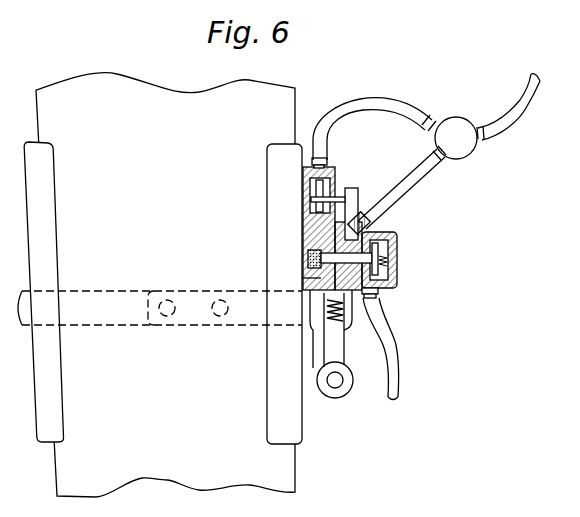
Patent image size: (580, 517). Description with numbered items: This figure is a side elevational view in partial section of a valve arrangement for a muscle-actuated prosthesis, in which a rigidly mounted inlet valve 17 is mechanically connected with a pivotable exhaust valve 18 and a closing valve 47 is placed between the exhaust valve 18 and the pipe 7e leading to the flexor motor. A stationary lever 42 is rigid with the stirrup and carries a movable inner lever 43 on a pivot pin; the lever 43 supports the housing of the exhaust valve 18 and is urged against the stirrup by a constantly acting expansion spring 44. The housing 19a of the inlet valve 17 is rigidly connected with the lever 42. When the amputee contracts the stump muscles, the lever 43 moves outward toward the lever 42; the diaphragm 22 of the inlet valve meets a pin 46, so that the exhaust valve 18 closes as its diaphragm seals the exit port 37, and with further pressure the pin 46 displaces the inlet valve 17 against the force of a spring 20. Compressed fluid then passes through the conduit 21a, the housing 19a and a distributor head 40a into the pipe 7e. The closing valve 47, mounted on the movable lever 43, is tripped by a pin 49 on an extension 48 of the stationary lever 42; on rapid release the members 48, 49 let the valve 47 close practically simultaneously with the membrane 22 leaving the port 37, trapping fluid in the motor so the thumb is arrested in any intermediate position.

The pipe 7e is at (515, 110).
The inlet valve 17 is at (396, 245).
The exhaust valve 18 is at (309, 266).
The housing of inlet valve 19a is at (368, 228).
The spring 20 is at (397, 273).
The conduit 21a is at (390, 380).
The diaphragm 22 is at (320, 250).
The exit port 37 is at (309, 259).
The distributor head 40a is at (458, 150).
The lever 42 is at (352, 333).
The lever 43 is at (313, 368).
The expansion spring 44 is at (343, 313).
The pin 46 is at (311, 296).
The closing valve 47 is at (309, 197).
The extension 48 is at (355, 200).
The pin 49 is at (342, 197).